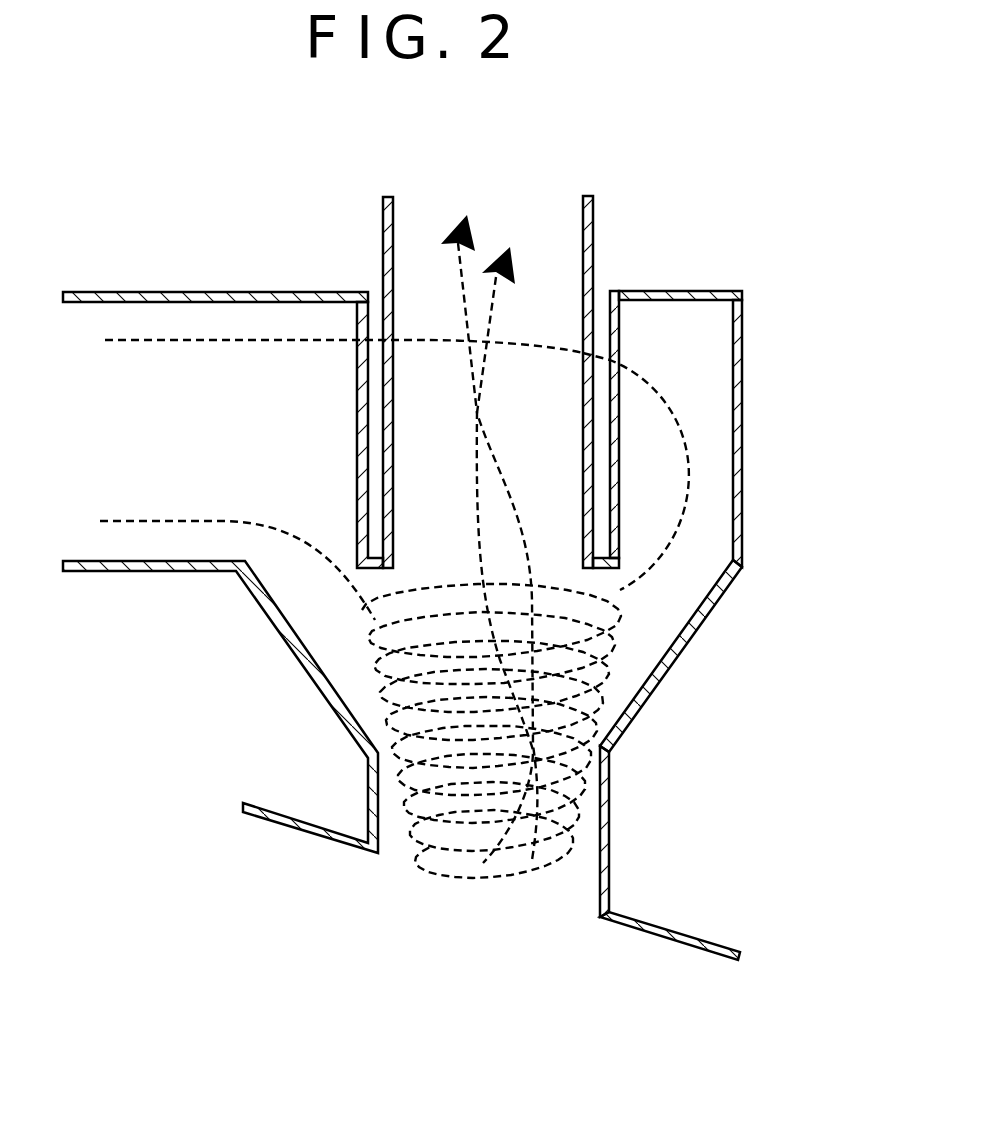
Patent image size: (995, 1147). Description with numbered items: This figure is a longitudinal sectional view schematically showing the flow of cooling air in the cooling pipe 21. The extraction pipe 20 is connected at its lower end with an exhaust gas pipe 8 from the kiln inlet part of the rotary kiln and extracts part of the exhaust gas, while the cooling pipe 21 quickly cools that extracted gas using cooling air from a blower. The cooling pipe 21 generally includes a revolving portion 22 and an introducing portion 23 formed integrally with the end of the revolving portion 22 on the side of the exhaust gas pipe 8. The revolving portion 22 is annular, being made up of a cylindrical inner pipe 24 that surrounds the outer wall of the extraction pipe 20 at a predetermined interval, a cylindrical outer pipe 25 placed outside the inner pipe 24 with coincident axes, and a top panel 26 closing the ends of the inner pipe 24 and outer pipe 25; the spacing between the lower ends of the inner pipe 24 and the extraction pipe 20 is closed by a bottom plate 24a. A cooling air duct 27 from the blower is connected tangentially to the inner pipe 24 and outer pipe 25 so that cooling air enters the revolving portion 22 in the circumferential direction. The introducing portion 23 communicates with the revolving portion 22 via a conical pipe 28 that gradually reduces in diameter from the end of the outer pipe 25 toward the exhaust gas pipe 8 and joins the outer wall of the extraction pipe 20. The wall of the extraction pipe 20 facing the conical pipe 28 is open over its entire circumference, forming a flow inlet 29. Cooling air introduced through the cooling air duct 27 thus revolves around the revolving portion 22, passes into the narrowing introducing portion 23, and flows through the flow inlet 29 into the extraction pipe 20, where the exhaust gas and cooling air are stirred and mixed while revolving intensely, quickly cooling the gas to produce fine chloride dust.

The exhaust gas pipe 8 is at (680, 938).
The extraction pipe 20 is at (598, 212).
The cooling pipe 21 is at (729, 588).
The revolving portion 22 is at (712, 540).
The introducing portion 23 is at (633, 656).
The inner pipe 24 is at (622, 316).
The bottom plate 24a is at (613, 557).
The outer pipe 25 is at (745, 495).
The top panel 26 is at (683, 292).
The cooling air duct 27 is at (82, 296).
The conical pipe 28 is at (640, 707).
The flow inlet 29 is at (356, 603).